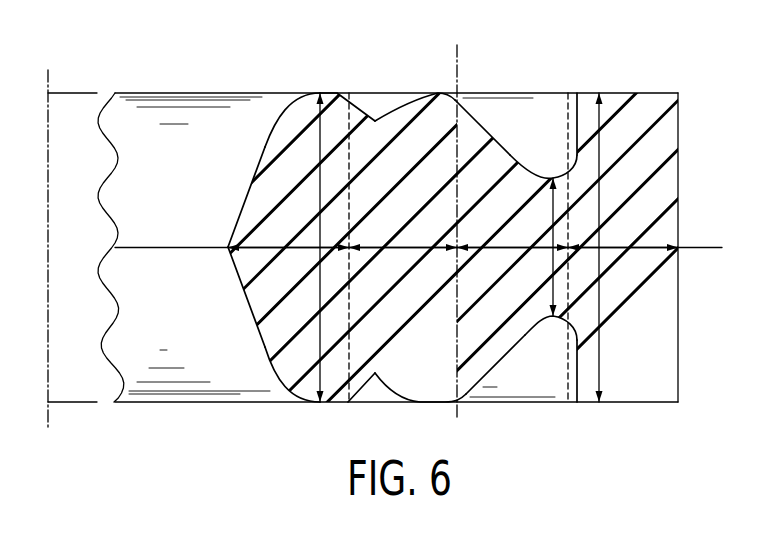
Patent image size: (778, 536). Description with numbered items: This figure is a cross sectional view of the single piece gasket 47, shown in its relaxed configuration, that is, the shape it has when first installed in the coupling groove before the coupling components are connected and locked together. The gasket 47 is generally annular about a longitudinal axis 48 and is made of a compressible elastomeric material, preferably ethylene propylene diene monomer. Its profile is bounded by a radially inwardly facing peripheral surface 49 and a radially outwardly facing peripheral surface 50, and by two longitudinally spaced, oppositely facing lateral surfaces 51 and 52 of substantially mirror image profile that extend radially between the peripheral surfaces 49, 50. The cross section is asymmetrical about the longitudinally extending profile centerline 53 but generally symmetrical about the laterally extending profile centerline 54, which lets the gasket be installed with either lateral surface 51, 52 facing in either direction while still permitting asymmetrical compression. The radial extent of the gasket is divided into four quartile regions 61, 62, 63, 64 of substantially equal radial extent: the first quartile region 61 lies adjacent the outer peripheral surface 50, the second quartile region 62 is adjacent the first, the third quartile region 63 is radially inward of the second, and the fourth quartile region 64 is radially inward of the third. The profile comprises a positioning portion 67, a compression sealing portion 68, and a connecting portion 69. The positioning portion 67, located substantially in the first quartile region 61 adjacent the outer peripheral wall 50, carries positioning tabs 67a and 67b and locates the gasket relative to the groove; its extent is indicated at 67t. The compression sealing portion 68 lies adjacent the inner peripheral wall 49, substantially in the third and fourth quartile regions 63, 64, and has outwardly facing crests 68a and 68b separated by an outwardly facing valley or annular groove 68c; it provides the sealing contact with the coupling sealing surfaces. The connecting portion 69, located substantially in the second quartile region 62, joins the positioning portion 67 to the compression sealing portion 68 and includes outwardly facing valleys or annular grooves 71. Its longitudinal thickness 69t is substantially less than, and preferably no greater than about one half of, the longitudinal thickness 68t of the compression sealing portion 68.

The gasket 47 is at (647, 63).
The longitudinal axis 48 is at (48, 77).
The radially inwardly facing peripheral surface 49 is at (250, 305).
The radially outwardly facing peripheral surface 50 is at (679, 284).
The lateral surface 51 is at (487, 117).
The lateral surface 52 is at (493, 362).
The longitudinally extending profile centerline 53 is at (458, 57).
The laterally extending profile centerline 54 is at (718, 247).
The first quartile region 61 is at (633, 250).
The second quartile region 62 is at (492, 250).
The third quartile region 63 is at (395, 250).
The fourth quartile region 64 is at (297, 250).
The positioning portion 67 is at (655, 212).
The positioning tab 67a is at (580, 125).
The positioning tab 67b is at (580, 358).
The flange thickness 67t is at (632, 147).
The compression sealing portion 68 is at (389, 192).
The outwardly facing crest 68a is at (319, 92).
The outwardly facing crest 68b is at (438, 92).
The outwardly facing valley or annular groove 68c is at (375, 119).
The longitudinal thickness of the compression sealing portion 68t is at (320, 198).
The connecting portion 69 is at (541, 232).
The longitudinal thickness of the connecting portion 69t is at (550, 316).
The outwardly facing valleys or annular grooves 71 is at (552, 176).